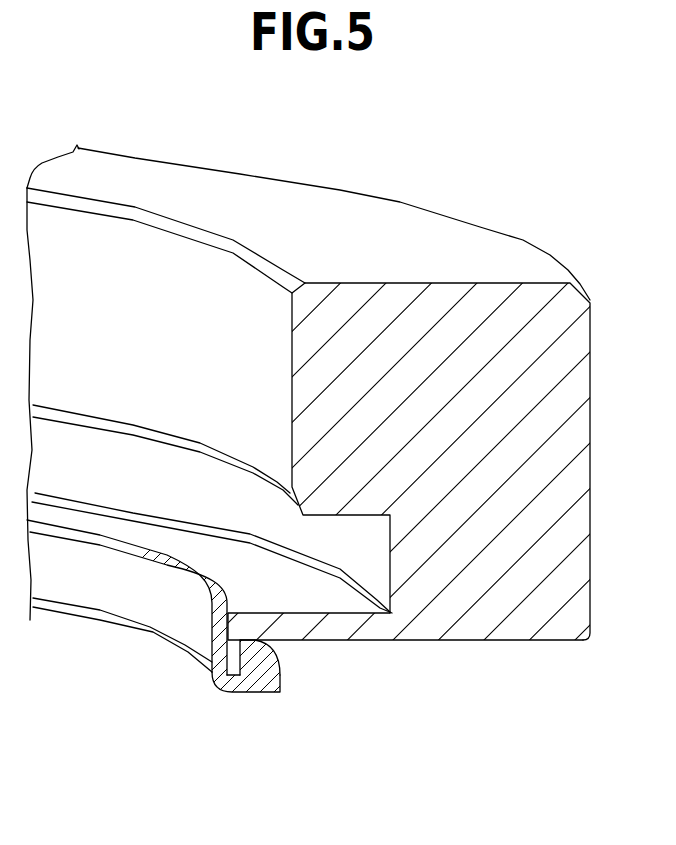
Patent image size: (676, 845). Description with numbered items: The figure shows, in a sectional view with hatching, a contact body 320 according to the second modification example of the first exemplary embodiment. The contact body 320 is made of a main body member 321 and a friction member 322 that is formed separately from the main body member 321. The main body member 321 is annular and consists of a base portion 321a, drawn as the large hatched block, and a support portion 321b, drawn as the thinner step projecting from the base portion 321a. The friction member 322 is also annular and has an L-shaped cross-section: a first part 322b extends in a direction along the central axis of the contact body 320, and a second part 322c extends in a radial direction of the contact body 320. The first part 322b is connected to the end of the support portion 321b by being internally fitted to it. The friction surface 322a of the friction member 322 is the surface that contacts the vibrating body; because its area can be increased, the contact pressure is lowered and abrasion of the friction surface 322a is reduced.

The contact body 320 is at (338, 554).
The main body member 321 is at (338, 531).
The base portion 321a is at (528, 628).
The support portion 321b is at (535, 738).
The friction member 322 is at (338, 546).
The friction surface 322a is at (245, 692).
The first part 322b is at (213, 636).
The second part 322c is at (232, 667).